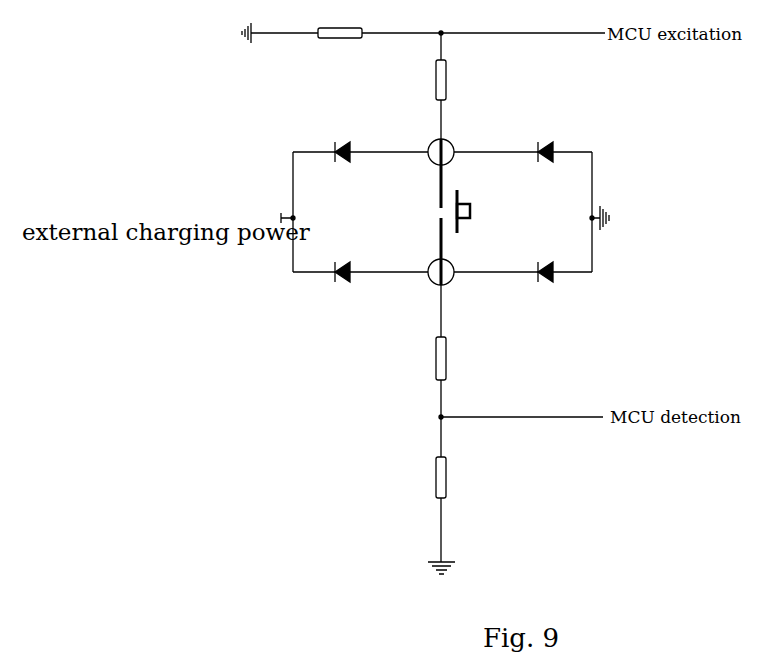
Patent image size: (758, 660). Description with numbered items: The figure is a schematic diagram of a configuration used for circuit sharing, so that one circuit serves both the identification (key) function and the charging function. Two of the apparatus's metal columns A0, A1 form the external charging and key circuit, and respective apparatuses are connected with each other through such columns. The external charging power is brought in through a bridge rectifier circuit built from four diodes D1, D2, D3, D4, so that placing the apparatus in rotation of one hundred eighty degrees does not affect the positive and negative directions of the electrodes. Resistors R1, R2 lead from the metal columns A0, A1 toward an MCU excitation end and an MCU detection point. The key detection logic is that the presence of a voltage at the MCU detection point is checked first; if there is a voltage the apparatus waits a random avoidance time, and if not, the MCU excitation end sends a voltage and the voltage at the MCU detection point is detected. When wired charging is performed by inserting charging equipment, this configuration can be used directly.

The resistor R1 (200K) R1 is at (462, 220).
The resistor R2 (300K / 200K) R2 is at (403, 254).
The diode D1 is at (334, 160).
The diode D2 is at (534, 159).
The diode D3 is at (334, 278).
The diode D4 is at (534, 278).
The metal column A0 is at (453, 173).
The metal column A1 is at (449, 262).